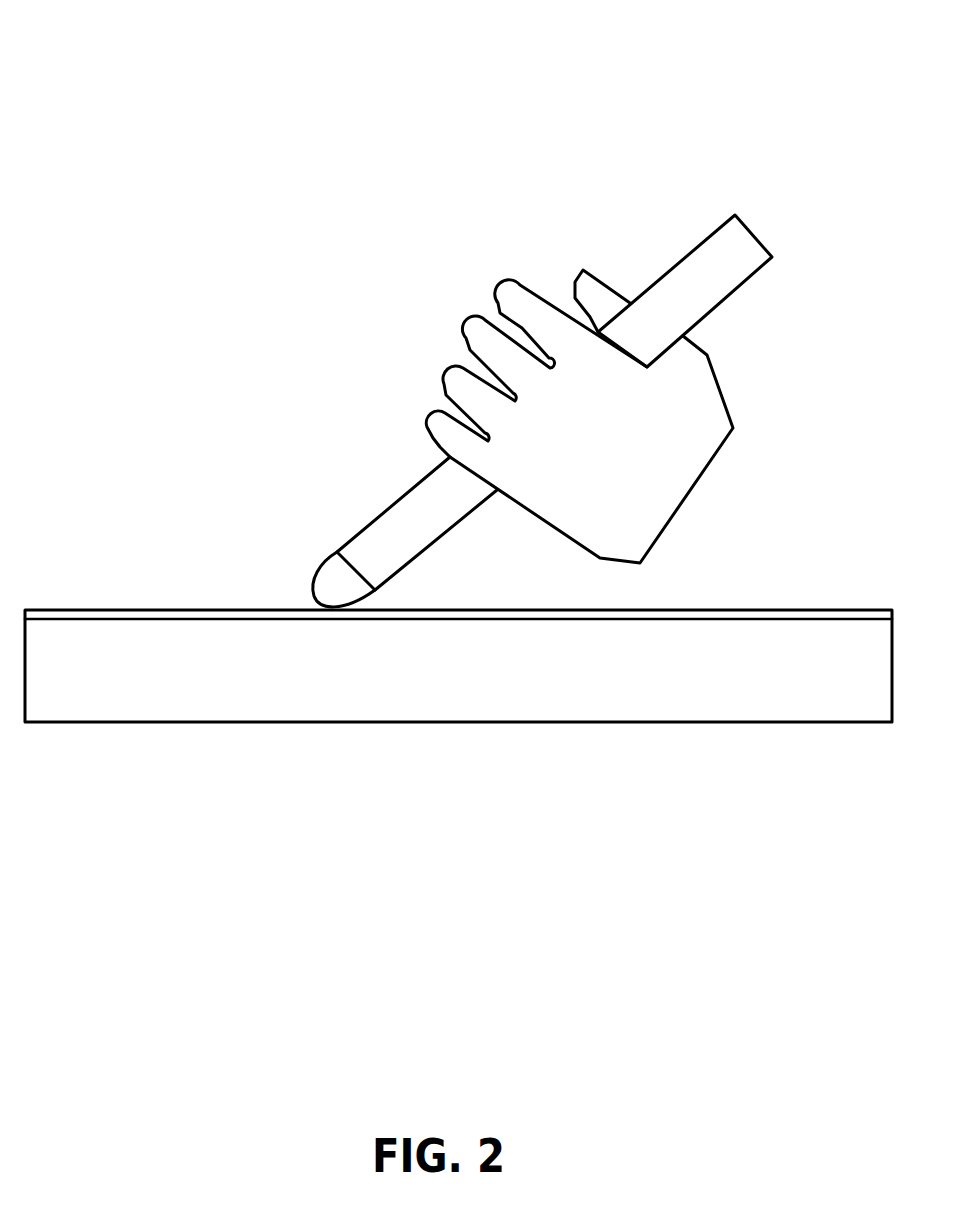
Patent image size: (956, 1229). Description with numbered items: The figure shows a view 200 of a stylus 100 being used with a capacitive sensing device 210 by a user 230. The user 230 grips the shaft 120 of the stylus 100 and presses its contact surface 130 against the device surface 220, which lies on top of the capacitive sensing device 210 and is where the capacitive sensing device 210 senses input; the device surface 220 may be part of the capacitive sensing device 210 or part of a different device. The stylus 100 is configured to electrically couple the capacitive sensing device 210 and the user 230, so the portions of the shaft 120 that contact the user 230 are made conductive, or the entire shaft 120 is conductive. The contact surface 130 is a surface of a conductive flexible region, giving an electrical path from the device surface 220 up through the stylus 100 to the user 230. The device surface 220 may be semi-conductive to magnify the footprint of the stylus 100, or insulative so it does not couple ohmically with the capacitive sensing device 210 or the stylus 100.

The view 200 is at (231, 131).
The stylus 100 is at (308, 445).
The shaft 120 is at (428, 517).
The contact surface 130 is at (323, 560).
The capacitive sensing device 210 is at (322, 662).
The device surface 220 is at (425, 615).
The user 230 is at (720, 450).